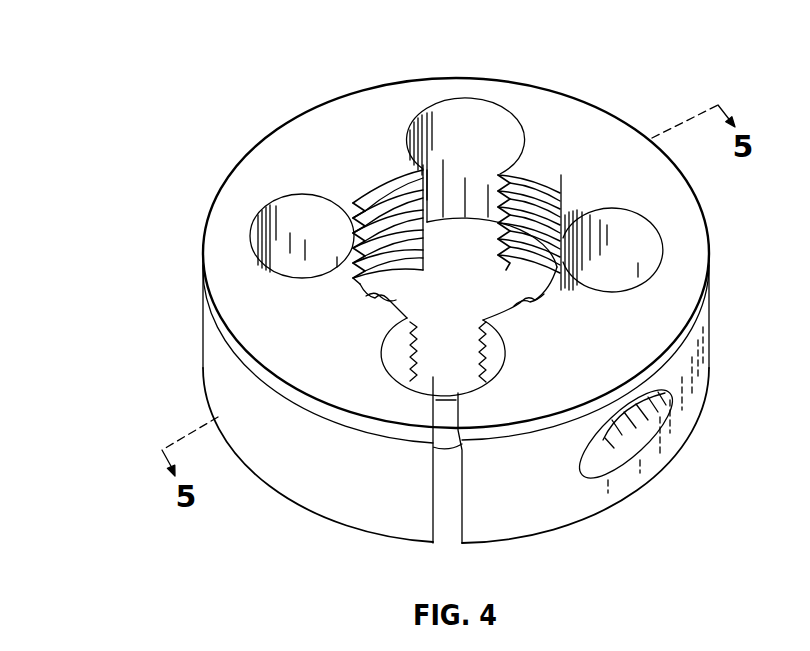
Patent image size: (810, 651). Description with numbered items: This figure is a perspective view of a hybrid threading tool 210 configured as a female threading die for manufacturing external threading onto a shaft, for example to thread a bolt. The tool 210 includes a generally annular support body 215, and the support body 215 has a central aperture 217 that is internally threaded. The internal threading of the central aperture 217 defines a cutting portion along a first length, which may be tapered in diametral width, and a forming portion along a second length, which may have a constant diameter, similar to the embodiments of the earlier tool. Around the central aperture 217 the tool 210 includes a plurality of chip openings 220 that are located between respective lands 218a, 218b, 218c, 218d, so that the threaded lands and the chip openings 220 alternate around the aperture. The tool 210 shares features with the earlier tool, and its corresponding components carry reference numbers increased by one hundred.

The hybrid threading tool 210 is at (170, 60).
The support body 215 is at (613, 128).
The central aperture 217 is at (455, 268).
The land 218a is at (546, 210).
The land 218b is at (520, 300).
The land 218c is at (372, 296).
The land 218d is at (385, 218).
The chip openings 220 is at (453, 112).